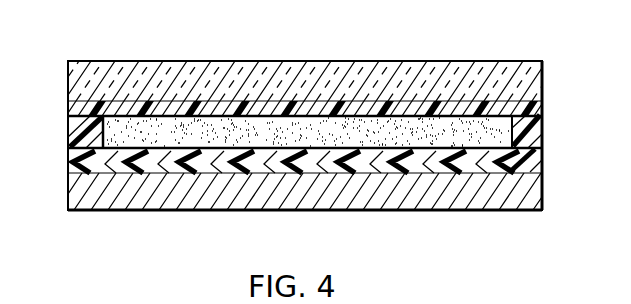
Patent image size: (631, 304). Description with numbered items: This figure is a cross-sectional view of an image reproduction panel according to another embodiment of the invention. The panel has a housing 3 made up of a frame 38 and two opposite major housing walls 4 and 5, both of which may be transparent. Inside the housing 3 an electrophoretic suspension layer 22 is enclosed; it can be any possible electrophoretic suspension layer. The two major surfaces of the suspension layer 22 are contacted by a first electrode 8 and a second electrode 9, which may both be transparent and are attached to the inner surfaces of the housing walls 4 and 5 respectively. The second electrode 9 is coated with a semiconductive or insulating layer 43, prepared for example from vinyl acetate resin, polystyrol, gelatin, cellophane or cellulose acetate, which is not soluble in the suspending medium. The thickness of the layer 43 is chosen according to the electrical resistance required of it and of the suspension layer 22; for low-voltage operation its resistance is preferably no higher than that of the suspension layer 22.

The housing 3 is at (62, 55).
The major housing wall 4 is at (84, 79).
The first electrode 8 is at (68, 107).
The frame 38 is at (75, 131).
The suspension layer 22 is at (157, 130).
The second electrode 9 is at (80, 163).
The semiconductive or insulating layer 43 is at (213, 150).
The major housing wall 5 is at (80, 192).